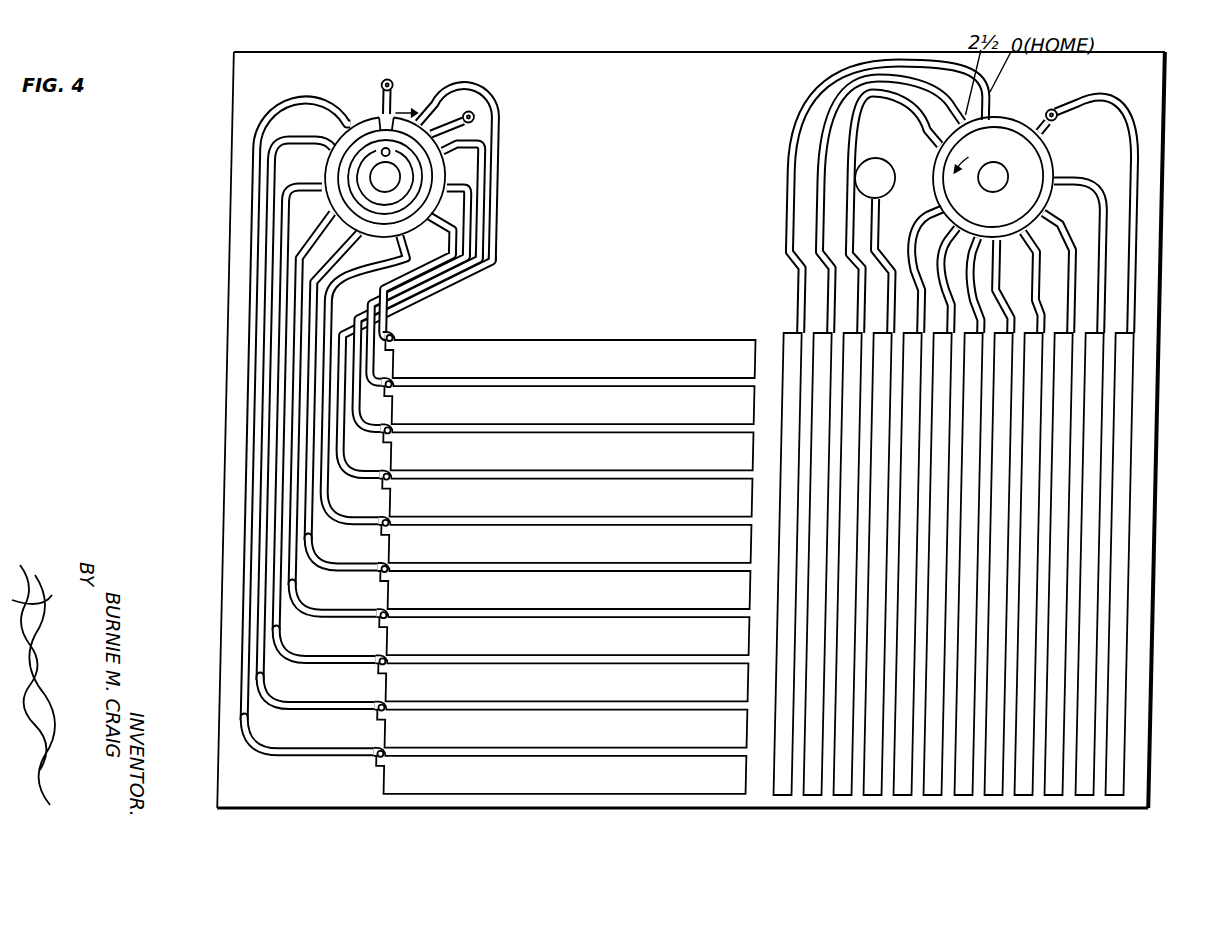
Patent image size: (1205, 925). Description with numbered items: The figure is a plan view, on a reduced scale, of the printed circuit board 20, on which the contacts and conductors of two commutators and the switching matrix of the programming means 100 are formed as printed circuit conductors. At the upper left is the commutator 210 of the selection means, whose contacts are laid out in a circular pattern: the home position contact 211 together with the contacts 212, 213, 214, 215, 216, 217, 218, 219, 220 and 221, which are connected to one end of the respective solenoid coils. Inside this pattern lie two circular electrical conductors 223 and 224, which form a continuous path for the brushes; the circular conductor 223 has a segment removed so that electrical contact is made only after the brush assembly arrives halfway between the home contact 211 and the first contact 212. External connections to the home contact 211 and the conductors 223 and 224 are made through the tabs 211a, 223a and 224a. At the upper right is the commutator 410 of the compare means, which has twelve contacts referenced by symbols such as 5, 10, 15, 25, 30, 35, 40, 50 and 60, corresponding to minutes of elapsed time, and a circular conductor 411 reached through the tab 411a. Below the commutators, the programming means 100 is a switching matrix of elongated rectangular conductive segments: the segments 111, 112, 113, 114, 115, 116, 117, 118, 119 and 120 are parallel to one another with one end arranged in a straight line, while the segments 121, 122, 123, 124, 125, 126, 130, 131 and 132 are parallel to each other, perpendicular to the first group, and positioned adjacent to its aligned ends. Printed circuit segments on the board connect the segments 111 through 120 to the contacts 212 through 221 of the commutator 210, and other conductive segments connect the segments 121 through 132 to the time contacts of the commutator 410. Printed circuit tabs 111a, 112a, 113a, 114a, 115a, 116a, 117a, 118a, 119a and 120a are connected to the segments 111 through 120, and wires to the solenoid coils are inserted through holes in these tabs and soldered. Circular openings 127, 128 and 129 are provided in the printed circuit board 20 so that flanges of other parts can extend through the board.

The printed circuit board 20 is at (1182, 50).
The programming means 100 is at (644, 330).
The conductive segment 111 is at (555, 369).
The conductive segment 112 is at (555, 415).
The conductive segment 113 is at (555, 461).
The conductive segment 114 is at (555, 508).
The conductive segment 115 is at (555, 554).
The conductive segment 116 is at (555, 600).
The conductive segment 117 is at (555, 646).
The conductive segment 118 is at (555, 693).
The conductive segment 119 is at (555, 739).
The conductive segment 120 is at (555, 785).
The printed circuit tab 111a is at (400, 336).
The printed circuit tab 112a is at (399, 393).
The printed circuit tab 113a is at (399, 440).
The printed circuit tab 114a is at (388, 482).
The printed circuit tab 115a is at (388, 527).
The printed circuit tab 116a is at (388, 572).
The printed circuit tab 117a is at (388, 618).
The printed circuit tab 118a is at (388, 664).
The printed circuit tab 119a is at (388, 710).
The printed circuit tab 120a is at (388, 757).
The conductive segment 121 is at (800, 808).
The conductive segment 122 is at (830, 808).
The conductive segment 123 is at (860, 808).
The conductive segment 124 is at (891, 808).
The conductive segment 125 is at (921, 808).
The conductive segment 126 is at (951, 808).
The circular opening 127 is at (1004, 185).
The circular opening 128 is at (373, 178).
The circular opening 129 is at (858, 176).
The conductive segment 130 is at (1072, 808).
The conductive segment 131 is at (1102, 808).
The conductive segment 132 is at (1132, 808).
The commutator 210 is at (435, 64).
The home position contact 211 is at (386, 95).
The tab 211a is at (428, 44).
The contact 212 is at (433, 100).
The contact 213 is at (462, 151).
The contact 214 is at (463, 191).
The contact 215 is at (450, 222).
The contact 216 is at (478, 268).
The contact 217 is at (318, 272).
The contact 218 is at (302, 240).
The contact 219 is at (286, 204).
The contact 220 is at (280, 162).
The contact 221 is at (350, 114).
The circular electrical conductor 223 is at (448, 208).
The tab 223a is at (478, 118).
The circular electrical conductor 224 is at (426, 176).
The tab 224a is at (355, 100).
The commutator 410 is at (1080, 62).
The circular conductor 411 is at (1003, 232).
The tab 411a is at (1060, 124).
The electrical contact 5 is at (945, 123).
The electrical contact 10 is at (936, 152).
The electrical contact 15 is at (930, 213).
The electrical contact 25 is at (982, 258).
The electrical contact 30 is at (1022, 270).
The electrical contact 35 is at (1062, 240).
The electrical contact 40 is at (1058, 218).
The electrical contact 50 is at (1062, 178).
The electrical contact 60 is at (1049, 112).